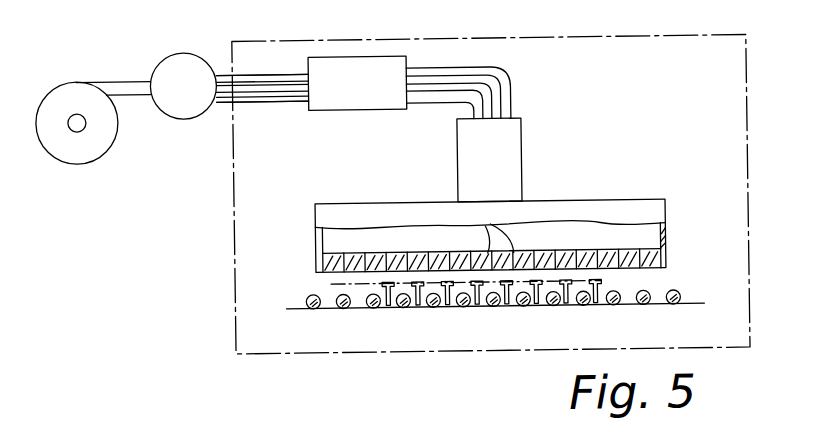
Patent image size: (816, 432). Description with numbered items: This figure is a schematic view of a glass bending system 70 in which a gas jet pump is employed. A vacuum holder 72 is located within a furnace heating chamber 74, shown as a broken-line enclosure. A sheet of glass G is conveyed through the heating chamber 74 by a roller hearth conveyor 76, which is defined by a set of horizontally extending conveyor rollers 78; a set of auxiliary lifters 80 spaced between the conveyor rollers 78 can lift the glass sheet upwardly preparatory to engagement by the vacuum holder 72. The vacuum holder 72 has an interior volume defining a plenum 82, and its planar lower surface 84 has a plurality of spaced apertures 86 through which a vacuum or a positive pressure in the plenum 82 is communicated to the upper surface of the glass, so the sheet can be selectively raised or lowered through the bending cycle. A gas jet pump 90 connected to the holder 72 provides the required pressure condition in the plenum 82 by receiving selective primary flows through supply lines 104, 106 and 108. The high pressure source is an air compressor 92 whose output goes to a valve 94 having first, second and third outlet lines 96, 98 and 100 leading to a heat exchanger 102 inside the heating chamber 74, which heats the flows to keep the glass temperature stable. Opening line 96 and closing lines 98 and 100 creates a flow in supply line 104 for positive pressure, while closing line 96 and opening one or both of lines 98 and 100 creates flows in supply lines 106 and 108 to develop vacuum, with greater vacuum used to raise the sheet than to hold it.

The glass bending system 70 is at (206, 277).
The vacuum holder 72 is at (620, 203).
The furnace heating chamber 74 is at (233, 230).
The roller hearth conveyor 76 is at (678, 297).
The conveyor rollers 78 is at (643, 307).
The auxiliary lifters 80 is at (446, 307).
The plenum 82 is at (367, 238).
The lower surface 84 is at (653, 272).
The apertures 86 is at (484, 228).
The gas jet pump 90 is at (524, 161).
The air compressor 92 is at (65, 143).
The valve 94 is at (178, 106).
The first outlet line 96 is at (285, 70).
The second outlet line 98 is at (255, 84).
The third outlet line 100 is at (298, 96).
The heat exchanger 102 is at (367, 96).
The supply line 104 is at (500, 68).
The supply line 106 is at (460, 85).
The supply line 108 is at (442, 97).